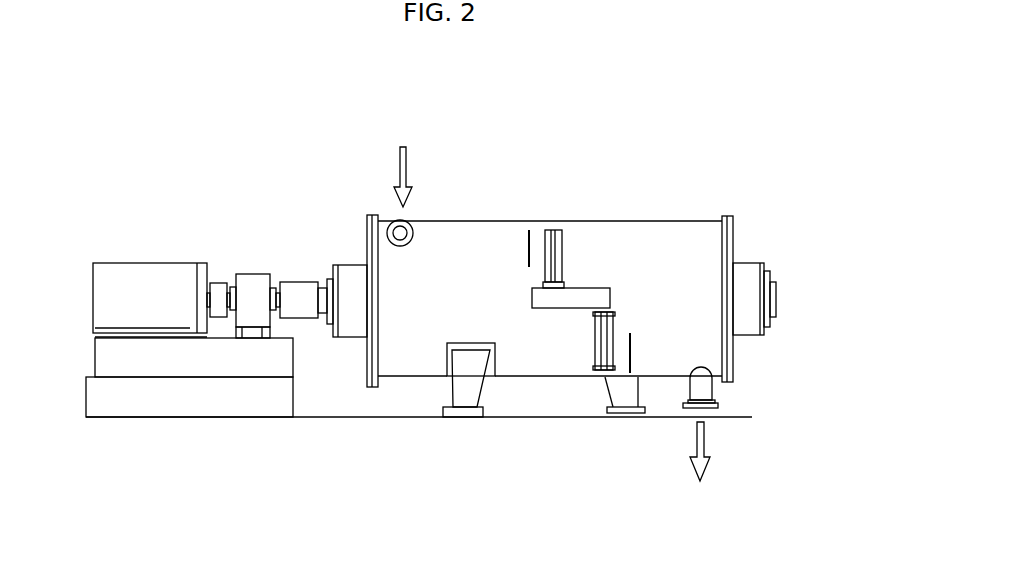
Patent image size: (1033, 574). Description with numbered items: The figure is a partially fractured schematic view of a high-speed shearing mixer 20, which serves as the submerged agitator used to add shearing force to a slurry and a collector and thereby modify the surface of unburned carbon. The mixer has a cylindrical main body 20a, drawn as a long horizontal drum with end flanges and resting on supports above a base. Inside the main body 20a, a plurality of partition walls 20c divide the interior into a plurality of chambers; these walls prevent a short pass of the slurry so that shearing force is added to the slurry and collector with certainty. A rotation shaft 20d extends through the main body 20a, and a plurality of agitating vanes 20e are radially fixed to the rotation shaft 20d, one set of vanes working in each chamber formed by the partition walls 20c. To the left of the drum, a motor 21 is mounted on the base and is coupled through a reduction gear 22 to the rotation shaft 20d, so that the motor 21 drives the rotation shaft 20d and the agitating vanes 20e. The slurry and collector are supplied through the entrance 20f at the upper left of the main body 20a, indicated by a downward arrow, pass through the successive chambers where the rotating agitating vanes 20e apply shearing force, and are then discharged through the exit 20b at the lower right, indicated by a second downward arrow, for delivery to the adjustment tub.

The high-speed shearing mixer 20 is at (689, 144).
The cylindrical main body 20a is at (518, 377).
The exit 20b is at (718, 408).
The partition walls 20c is at (553, 313).
The rotation shaft 20d is at (553, 313).
The agitating vanes 20e is at (647, 376).
The entrance 20f is at (414, 233).
The motor 21 is at (148, 262).
The reduction gear 22 is at (253, 273).